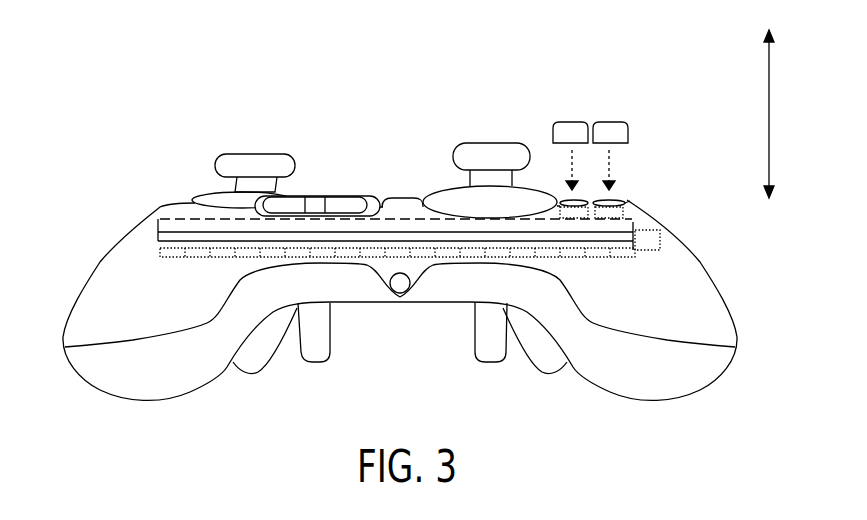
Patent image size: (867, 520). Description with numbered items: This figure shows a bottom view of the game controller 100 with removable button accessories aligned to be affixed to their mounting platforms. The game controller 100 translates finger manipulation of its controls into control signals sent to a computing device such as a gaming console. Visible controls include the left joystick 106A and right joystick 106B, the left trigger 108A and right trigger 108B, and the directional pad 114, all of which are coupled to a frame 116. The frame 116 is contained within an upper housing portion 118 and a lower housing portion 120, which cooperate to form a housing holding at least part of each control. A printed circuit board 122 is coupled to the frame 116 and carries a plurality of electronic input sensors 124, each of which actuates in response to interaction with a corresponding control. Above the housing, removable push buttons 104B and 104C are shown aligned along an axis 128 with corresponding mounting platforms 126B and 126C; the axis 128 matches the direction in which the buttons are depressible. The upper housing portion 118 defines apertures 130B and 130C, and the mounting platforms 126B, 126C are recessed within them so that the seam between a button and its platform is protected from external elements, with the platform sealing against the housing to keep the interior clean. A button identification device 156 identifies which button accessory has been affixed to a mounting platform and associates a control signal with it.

The game controller 100 is at (391, 214).
The removable push button 104B is at (630, 130).
The removable push button 104C is at (572, 122).
The left joystick 106A is at (251, 153).
The right joystick 106B is at (454, 156).
The left trigger 108A is at (313, 363).
The right trigger 108B is at (489, 363).
The directional pad 114 is at (338, 196).
The frame 116 is at (157, 229).
The upper housing portion 118 is at (110, 246).
The lower housing portion 120 is at (140, 403).
The printed circuit board 122 is at (158, 242).
The electronic input sensors 124 is at (579, 268).
The mounting platform 126B is at (626, 210).
The mounting platform 126C is at (555, 204).
The axis 128 is at (768, 72).
The aperture 130B is at (621, 199).
The aperture 130C is at (561, 197).
The button identification device 156 is at (646, 253).